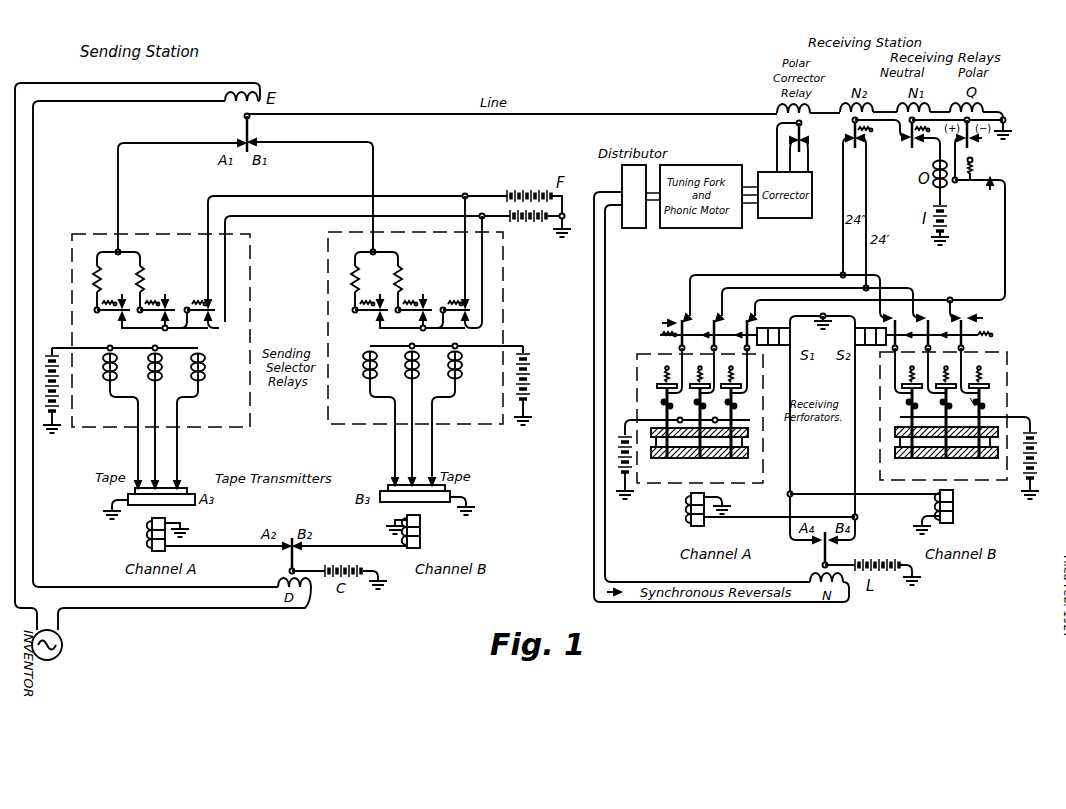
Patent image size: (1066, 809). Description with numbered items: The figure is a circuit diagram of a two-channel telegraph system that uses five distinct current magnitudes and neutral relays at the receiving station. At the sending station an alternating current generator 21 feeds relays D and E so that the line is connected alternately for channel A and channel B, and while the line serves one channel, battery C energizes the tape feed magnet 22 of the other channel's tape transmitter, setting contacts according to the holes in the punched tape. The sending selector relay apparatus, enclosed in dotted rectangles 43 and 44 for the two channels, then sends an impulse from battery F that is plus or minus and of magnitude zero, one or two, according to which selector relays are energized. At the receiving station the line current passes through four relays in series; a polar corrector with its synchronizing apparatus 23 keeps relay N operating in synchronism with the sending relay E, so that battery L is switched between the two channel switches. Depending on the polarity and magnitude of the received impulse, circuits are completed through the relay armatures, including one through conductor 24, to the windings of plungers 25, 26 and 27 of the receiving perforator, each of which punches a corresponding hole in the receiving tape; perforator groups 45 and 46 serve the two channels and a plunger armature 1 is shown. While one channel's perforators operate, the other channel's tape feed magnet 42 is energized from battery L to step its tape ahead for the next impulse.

The armature 1 is at (968, 406).
The alternating current generator 21 is at (61, 645).
The tape feed magnet 22 is at (295, 533).
The synchronizing apparatus 23 is at (781, 147).
The conductor 24 is at (1018, 240).
The plunger 25 is at (862, 412).
The plunger 26 is at (818, 412).
The plunger 27 is at (782, 412).
The tape feed magnet 42 is at (819, 516).
The dotted rectangle 43 is at (109, 235).
The dotted rectangle 44 is at (502, 289).
The receiving perforator channel A 45 is at (676, 484).
The receiving perforator channel B 46 is at (985, 479).